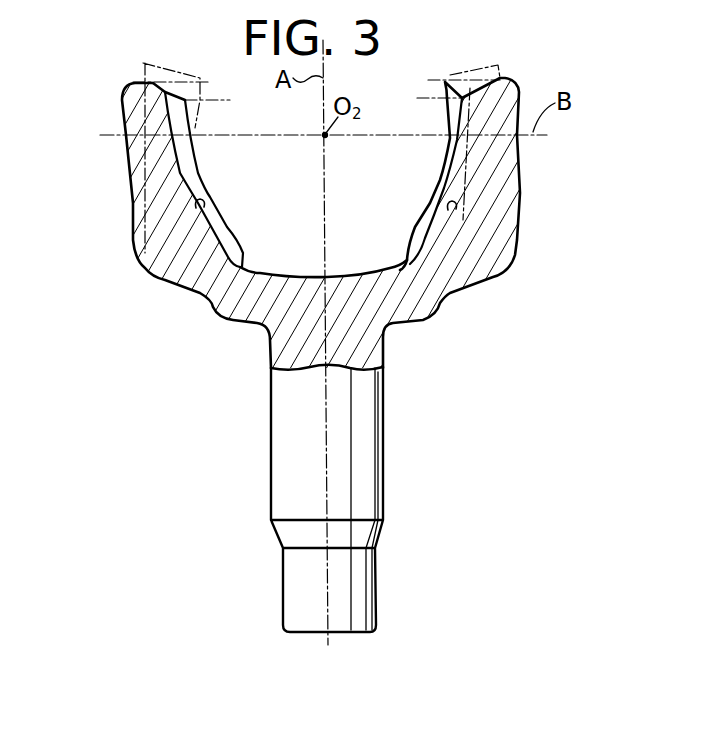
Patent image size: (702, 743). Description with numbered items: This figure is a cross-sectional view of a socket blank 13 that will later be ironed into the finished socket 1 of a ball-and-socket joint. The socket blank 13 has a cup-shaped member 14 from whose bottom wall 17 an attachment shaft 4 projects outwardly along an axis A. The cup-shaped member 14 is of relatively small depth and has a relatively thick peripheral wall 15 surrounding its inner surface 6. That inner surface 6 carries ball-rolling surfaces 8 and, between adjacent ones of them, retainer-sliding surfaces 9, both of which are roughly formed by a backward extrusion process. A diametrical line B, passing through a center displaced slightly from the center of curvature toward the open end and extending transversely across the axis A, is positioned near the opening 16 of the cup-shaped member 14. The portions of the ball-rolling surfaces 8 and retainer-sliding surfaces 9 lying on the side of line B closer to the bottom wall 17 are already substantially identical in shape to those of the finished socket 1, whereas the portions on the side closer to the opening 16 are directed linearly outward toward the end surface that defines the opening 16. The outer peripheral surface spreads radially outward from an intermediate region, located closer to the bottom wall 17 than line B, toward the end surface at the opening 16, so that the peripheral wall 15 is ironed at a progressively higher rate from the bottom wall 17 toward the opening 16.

The socket 1 is at (485, 58).
The attachment shaft 4 is at (367, 438).
The spherical inner surface 6 is at (431, 206).
The ball-rolling surfaces 8 is at (199, 204).
The retainer-sliding surfaces 9 is at (226, 224).
The socket blank 13 is at (523, 194).
The cup-shaped member 14 is at (131, 205).
The peripheral wall 15 is at (138, 155).
The opening 16 is at (445, 88).
The bottom wall 17 is at (291, 283).